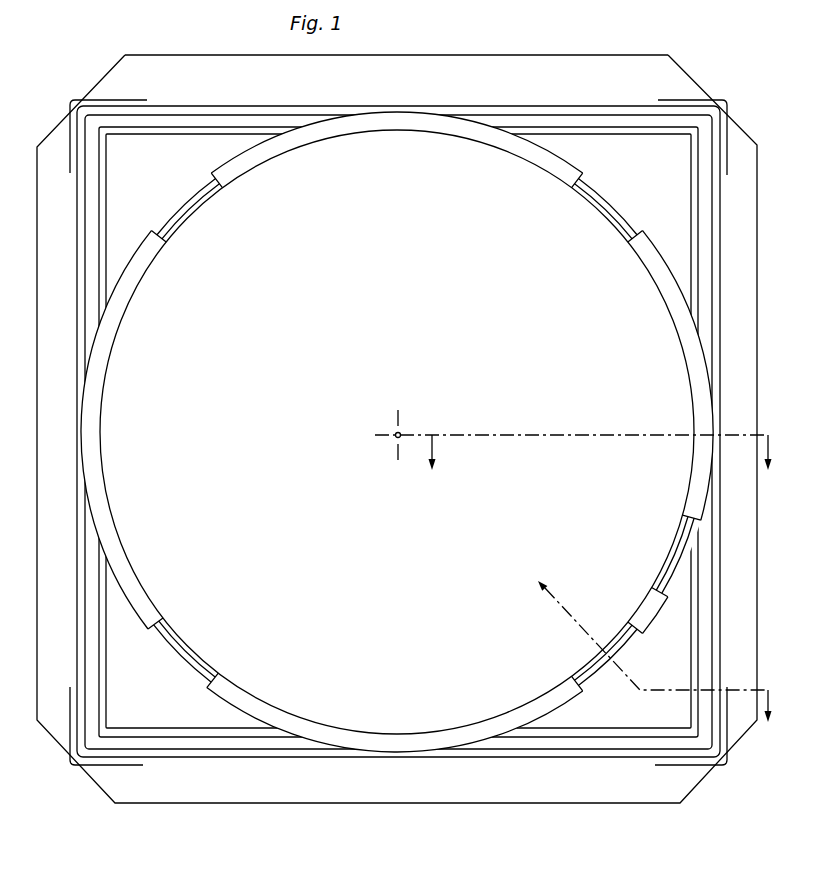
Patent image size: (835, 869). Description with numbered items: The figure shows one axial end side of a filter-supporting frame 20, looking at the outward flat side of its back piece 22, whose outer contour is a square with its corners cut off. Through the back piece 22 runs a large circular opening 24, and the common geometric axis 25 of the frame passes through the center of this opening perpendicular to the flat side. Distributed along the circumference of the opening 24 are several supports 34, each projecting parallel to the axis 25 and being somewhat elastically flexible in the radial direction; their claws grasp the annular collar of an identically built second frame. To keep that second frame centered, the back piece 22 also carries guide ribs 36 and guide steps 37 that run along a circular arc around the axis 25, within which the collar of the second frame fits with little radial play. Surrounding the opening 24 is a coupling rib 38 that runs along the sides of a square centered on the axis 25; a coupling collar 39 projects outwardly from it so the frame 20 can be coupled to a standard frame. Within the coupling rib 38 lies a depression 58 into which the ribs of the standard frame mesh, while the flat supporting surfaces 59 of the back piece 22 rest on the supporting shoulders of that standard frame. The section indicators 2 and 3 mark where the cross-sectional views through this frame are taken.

The filter-supporting frame 20 is at (672, 52).
The back piece 22 is at (170, 62).
The opening 24 is at (413, 145).
The axis 25 is at (396, 432).
The supports 34 is at (180, 186).
The guide ribs 36 is at (668, 578).
The guide steps 37 is at (697, 535).
The coupling rib 38 is at (722, 280).
The coupling collar 39 is at (728, 148).
The depression 58 is at (580, 112).
The supporting surfaces 59 is at (640, 145).
The section line 2- 2 is at (575, 465).
The section line 3- 3 is at (639, 662).